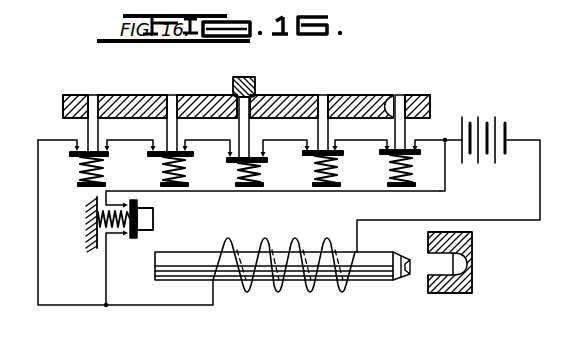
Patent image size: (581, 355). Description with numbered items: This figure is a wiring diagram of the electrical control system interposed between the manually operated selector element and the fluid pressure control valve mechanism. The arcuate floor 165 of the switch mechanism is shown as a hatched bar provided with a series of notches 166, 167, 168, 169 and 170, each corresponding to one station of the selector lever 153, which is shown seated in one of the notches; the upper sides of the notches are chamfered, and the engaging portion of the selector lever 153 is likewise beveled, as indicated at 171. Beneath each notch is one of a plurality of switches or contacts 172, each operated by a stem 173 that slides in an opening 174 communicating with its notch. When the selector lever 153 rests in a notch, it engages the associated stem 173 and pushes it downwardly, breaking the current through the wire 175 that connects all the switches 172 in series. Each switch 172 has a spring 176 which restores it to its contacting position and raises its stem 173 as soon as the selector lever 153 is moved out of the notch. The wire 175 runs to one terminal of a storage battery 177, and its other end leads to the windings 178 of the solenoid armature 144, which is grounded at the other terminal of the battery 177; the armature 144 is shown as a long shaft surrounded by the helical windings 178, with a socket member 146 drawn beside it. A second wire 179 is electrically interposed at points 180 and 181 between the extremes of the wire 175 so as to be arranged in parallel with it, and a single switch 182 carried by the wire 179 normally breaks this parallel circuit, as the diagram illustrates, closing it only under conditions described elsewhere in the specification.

The solenoid armature 144 is at (263, 284).
The socket block 146 is at (462, 240).
The selector lever 153 is at (245, 77).
The arcuate floor 165 is at (253, 91).
The notch 166 is at (231, 96).
The notch 167 is at (328, 95).
The notch 168 is at (408, 95).
The notch 169 is at (167, 95).
The notch 170 is at (88, 95).
The beveled portion 171 is at (267, 85).
The switch 172 is at (388, 157).
The stem 173 is at (405, 128).
The opening 174 is at (387, 96).
The wire 175 is at (457, 141).
The spring 176 is at (259, 173).
The storage battery 177 is at (476, 111).
The windings 178 is at (266, 236).
The wire 179 is at (218, 191).
The connection point 180 is at (441, 142).
The connection point 181 is at (106, 306).
The switch 182 is at (157, 216).